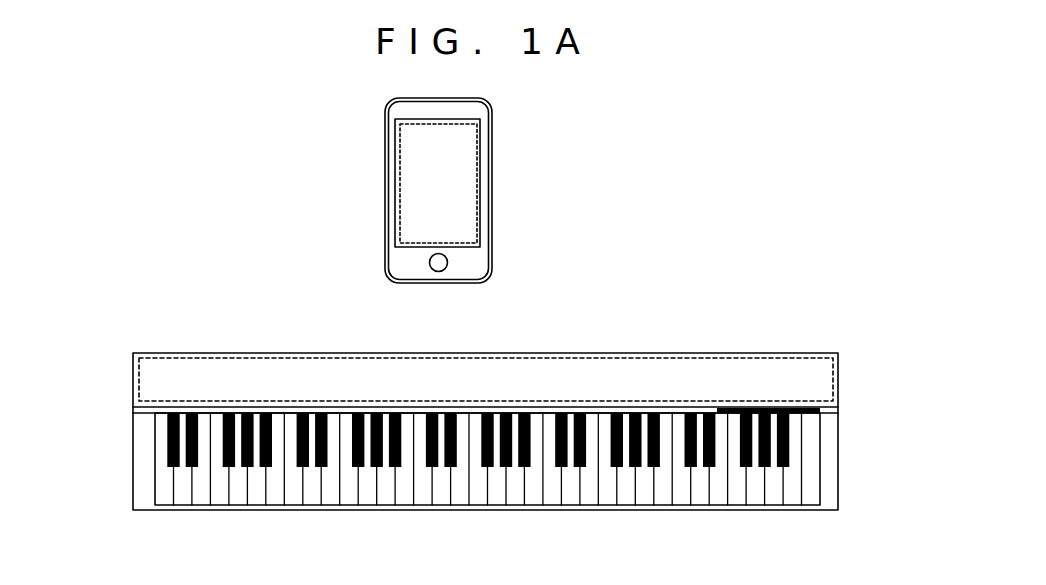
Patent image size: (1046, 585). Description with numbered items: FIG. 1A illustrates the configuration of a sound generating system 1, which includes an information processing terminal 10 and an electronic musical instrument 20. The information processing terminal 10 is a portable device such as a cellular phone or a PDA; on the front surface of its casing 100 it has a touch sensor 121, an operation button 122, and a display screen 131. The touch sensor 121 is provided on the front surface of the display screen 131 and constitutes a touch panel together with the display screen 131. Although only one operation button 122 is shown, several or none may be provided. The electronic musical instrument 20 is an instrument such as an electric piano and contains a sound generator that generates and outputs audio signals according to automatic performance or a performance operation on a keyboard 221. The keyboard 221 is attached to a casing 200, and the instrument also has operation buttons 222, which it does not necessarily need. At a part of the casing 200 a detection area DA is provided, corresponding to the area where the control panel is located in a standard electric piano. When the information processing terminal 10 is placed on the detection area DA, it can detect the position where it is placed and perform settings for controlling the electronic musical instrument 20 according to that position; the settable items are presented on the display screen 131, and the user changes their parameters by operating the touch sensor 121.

The sound generating system 1 is at (705, 173).
The information processing terminal 10 is at (582, 173).
The electronic musical instrument 20 is at (730, 307).
The casing 100 is at (434, 188).
The touch sensor 121 is at (434, 180).
The display screen 131 is at (478, 171).
The operation button 122 is at (429, 262).
The casing 200 is at (494, 437).
The keyboard 221 is at (830, 514).
The operation buttons 222 is at (820, 411).
The detection area DA is at (262, 358).